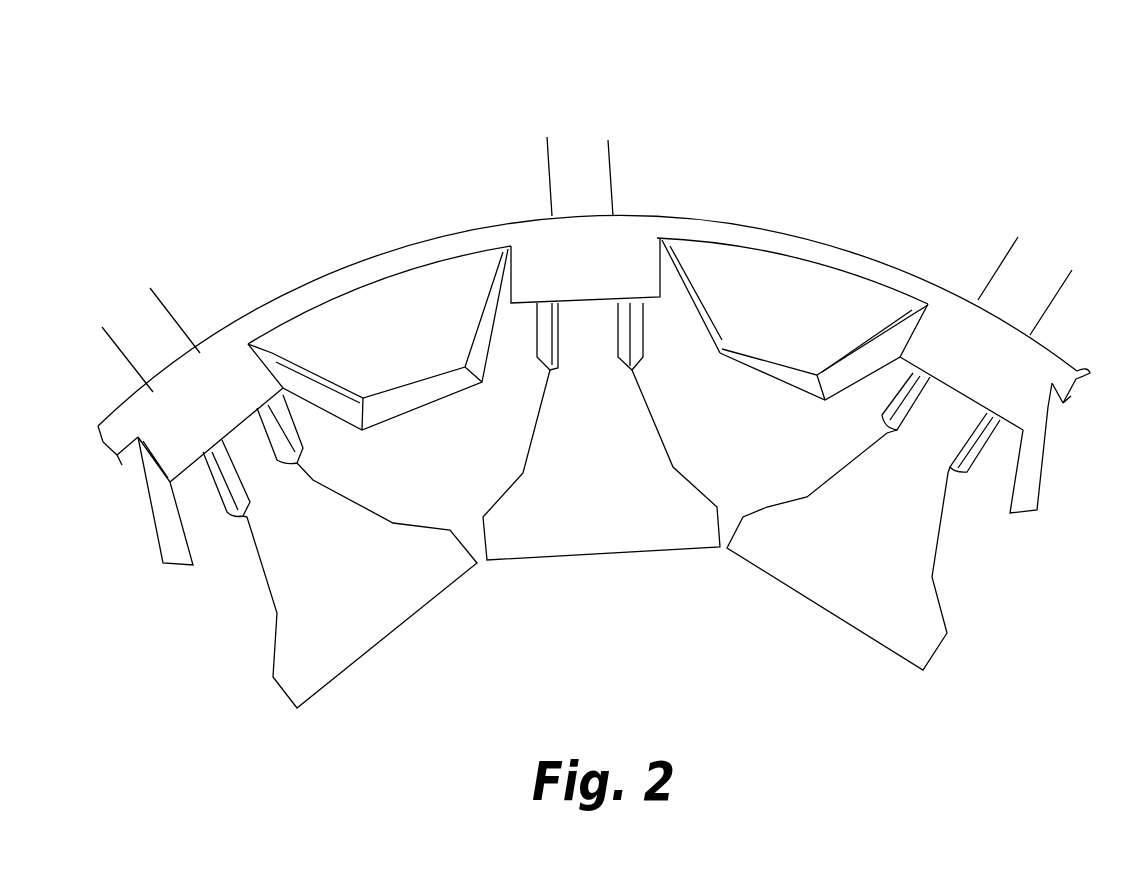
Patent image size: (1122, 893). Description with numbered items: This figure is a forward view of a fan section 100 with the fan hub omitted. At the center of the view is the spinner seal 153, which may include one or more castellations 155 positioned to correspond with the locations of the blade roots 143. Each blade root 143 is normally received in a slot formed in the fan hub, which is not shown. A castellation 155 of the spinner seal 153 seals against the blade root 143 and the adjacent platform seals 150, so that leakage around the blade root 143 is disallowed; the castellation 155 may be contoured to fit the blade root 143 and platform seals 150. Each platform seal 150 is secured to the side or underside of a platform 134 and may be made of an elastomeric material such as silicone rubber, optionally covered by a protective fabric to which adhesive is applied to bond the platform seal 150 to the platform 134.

The fan section 100 is at (972, 68).
The spinner seal 153 is at (407, 237).
The castellation 155 is at (628, 251).
The platform 134 is at (776, 280).
The platform seal 150 is at (682, 330).
The blade root 143 is at (607, 511).